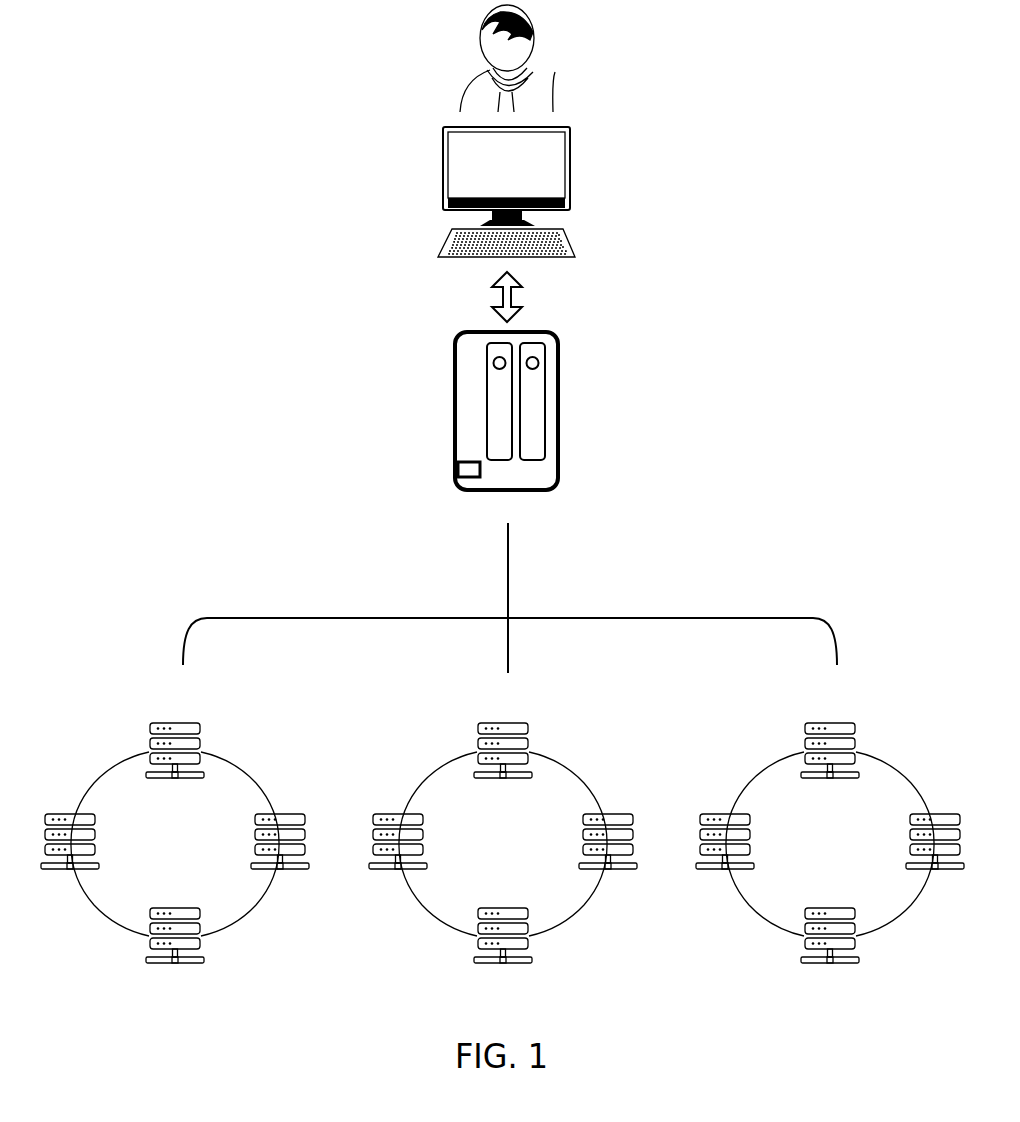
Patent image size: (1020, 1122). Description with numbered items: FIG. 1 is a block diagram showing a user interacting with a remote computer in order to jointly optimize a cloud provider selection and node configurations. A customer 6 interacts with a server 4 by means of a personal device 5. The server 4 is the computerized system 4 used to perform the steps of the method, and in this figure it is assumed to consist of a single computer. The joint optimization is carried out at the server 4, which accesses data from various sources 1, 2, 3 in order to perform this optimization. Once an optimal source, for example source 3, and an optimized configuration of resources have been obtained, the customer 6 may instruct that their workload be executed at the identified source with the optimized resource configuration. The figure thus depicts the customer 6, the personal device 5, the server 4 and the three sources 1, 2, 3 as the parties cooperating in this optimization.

The source 1 is at (220, 732).
The source 2 is at (575, 748).
The source 3 is at (863, 737).
The computerized system 4 is at (560, 423).
The personal device 5 is at (582, 202).
The customer 6 is at (555, 108).